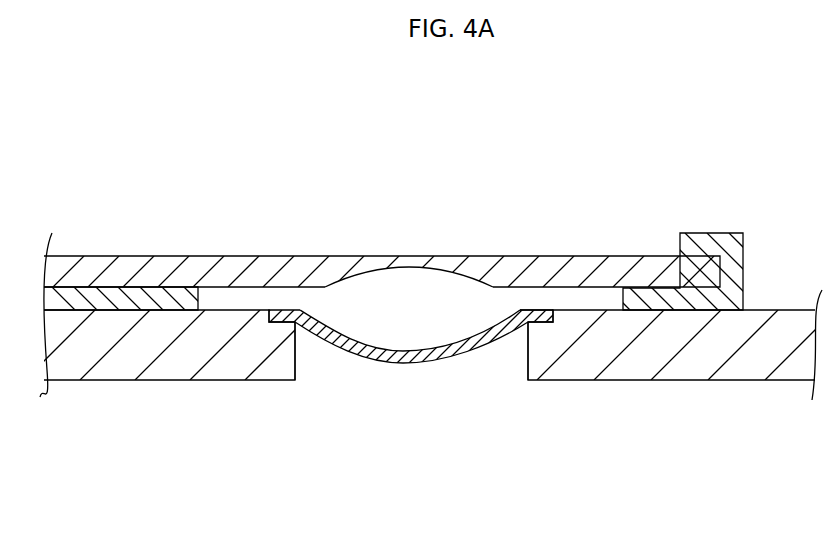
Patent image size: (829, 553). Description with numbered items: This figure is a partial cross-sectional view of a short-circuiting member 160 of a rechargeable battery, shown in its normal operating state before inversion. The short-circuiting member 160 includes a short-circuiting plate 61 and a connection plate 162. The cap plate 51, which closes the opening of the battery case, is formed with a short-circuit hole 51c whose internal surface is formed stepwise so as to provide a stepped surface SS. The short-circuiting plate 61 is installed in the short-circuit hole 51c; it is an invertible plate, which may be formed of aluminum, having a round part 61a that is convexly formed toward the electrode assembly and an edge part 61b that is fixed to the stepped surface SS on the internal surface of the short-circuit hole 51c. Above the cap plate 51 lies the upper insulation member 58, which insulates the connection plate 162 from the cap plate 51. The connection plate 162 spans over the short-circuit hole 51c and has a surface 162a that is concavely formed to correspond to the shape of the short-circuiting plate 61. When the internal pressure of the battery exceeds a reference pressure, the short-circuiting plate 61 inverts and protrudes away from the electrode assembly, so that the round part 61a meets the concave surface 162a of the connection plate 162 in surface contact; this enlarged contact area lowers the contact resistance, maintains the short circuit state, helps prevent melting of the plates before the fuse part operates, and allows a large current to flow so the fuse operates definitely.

The short-circuiting member 160 is at (425, 200).
The connection plate 162 is at (263, 272).
The surface 162a is at (412, 268).
The upper insulation member 58 is at (132, 300).
The cap plate 51 is at (695, 357).
The short-circuit hole 51c is at (450, 373).
The stepped surface SS is at (513, 337).
The short-circuiting plate 61 is at (411, 414).
The round part 61a is at (392, 364).
The edge part 61b is at (284, 310).